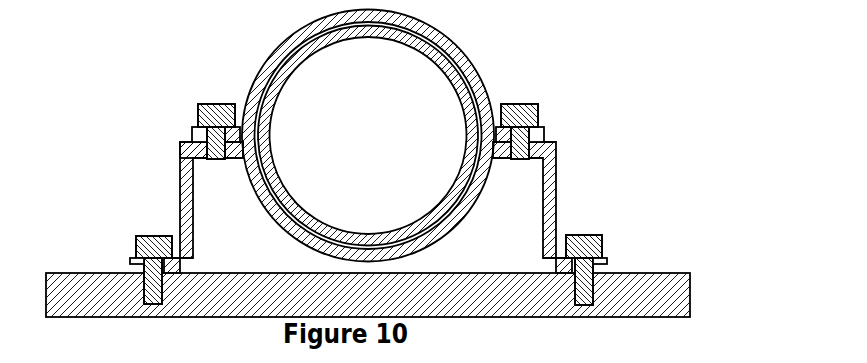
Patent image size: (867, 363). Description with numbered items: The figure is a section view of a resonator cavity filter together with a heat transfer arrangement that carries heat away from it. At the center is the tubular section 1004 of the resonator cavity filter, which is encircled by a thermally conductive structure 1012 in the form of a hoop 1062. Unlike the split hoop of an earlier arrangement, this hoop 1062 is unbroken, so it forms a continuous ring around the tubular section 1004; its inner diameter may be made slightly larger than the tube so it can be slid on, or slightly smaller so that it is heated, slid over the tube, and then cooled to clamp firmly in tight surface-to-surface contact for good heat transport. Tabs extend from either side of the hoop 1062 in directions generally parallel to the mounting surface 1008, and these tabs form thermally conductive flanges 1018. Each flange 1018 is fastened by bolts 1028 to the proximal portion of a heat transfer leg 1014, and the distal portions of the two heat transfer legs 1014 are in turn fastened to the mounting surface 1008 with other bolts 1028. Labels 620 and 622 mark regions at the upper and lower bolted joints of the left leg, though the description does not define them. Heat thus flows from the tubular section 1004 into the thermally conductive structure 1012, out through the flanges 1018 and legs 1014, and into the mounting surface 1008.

The mounting surface 1008 is at (668, 288).
The thermally conductive structure 1012 is at (338, 136).
The hoop 1062 is at (277, 58).
The tubular section 1004 is at (270, 92).
The heat transfer legs 1014 is at (368, 207).
The thermally conductive flanges 1018 is at (196, 136).
The bolts 1028 is at (374, 170).
The interface region 620 is at (185, 175).
The interface region 622 is at (140, 260).